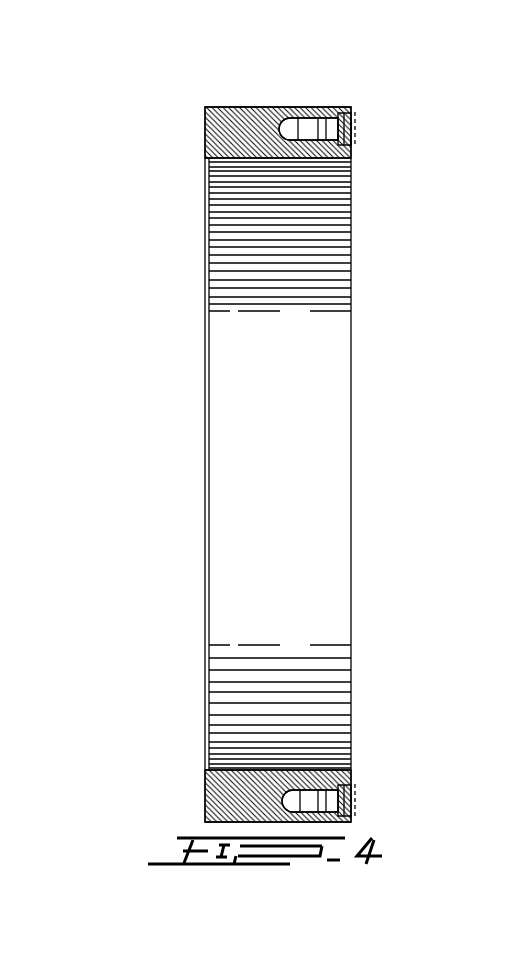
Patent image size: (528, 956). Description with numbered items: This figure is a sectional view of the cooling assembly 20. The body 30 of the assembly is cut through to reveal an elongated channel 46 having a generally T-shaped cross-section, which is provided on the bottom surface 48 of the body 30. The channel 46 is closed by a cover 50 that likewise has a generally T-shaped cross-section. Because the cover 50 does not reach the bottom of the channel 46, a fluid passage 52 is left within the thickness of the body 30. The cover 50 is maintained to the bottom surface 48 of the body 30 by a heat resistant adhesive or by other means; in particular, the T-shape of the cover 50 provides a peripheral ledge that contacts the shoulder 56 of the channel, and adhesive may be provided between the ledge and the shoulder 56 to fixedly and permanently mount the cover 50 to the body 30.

The cooling assembly 20 is at (395, 62).
The body 30 is at (205, 107).
The elongated channel 46 is at (298, 122).
The bottom surface 48 is at (354, 110).
The cover 50 is at (366, 140).
The fluid passage 52 is at (336, 114).
The shoulder 56 is at (345, 792).